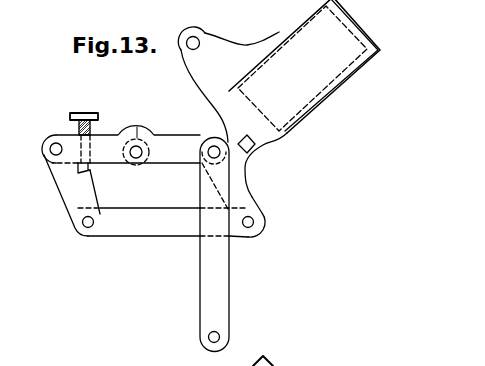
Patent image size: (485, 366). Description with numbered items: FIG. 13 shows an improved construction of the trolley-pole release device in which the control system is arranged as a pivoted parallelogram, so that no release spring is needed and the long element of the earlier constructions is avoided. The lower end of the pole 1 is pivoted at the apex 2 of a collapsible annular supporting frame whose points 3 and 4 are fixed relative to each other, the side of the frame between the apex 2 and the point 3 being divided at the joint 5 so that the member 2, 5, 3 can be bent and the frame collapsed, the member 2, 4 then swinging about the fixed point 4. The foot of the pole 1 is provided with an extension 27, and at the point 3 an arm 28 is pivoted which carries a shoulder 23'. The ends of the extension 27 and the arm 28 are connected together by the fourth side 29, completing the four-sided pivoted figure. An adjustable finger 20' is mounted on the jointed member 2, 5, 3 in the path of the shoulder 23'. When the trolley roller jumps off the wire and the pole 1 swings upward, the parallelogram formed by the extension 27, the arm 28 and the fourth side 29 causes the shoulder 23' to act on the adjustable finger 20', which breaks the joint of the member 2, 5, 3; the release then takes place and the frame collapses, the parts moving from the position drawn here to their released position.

The pole 1 is at (352, 42).
The apex of supporting frame 2 is at (216, 146).
The fixed point of supporting frame 3 is at (50, 148).
The fixed pivot of supporting frame 4 is at (211, 339).
The joint point of member 5 is at (140, 149).
The adjustable finger 20' is at (99, 128).
The shoulder 23' is at (105, 174).
The extension 27 is at (243, 193).
The arm 28 is at (67, 179).
The fourth side of parallelogram 29 is at (143, 234).